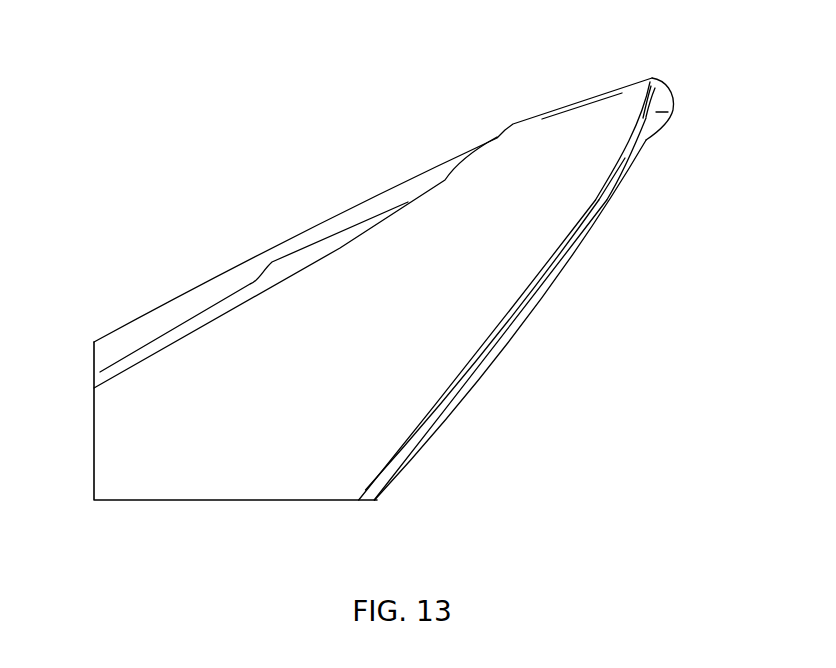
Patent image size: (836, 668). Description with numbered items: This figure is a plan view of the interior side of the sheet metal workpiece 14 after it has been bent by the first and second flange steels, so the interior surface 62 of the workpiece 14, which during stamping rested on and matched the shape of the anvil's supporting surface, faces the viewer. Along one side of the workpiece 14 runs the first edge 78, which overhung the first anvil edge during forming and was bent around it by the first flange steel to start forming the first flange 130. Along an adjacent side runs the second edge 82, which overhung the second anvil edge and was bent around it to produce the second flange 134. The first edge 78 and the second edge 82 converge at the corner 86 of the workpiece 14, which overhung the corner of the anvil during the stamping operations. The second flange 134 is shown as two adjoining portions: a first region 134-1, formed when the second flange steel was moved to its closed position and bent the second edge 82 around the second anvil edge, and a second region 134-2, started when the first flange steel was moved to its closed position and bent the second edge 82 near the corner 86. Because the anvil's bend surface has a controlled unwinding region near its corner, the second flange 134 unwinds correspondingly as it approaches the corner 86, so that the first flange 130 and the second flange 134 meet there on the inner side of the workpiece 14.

The sheet metal workpiece 14 is at (183, 412).
The interior surface 62 is at (303, 392).
The first edge 78 is at (590, 218).
The second edge 82 is at (223, 312).
The corner 86 is at (661, 80).
The first flange 130 is at (628, 174).
The second flange 134 is at (253, 282).
The first region of the second flange 134-1 is at (276, 254).
The second region of the second flange 134-2 is at (566, 108).